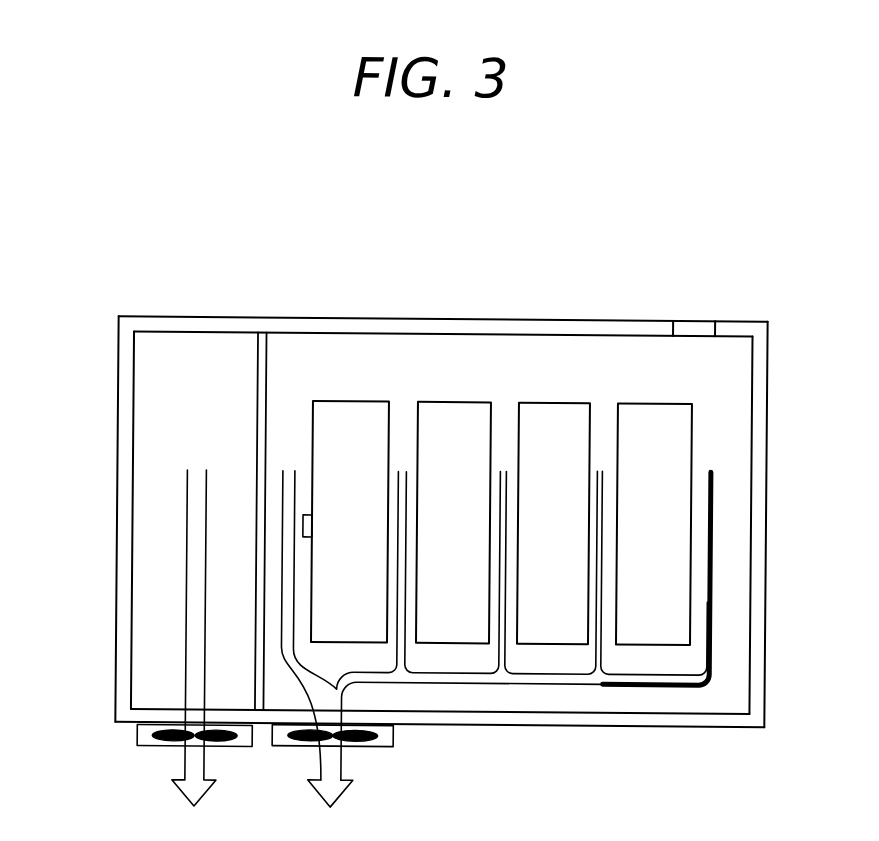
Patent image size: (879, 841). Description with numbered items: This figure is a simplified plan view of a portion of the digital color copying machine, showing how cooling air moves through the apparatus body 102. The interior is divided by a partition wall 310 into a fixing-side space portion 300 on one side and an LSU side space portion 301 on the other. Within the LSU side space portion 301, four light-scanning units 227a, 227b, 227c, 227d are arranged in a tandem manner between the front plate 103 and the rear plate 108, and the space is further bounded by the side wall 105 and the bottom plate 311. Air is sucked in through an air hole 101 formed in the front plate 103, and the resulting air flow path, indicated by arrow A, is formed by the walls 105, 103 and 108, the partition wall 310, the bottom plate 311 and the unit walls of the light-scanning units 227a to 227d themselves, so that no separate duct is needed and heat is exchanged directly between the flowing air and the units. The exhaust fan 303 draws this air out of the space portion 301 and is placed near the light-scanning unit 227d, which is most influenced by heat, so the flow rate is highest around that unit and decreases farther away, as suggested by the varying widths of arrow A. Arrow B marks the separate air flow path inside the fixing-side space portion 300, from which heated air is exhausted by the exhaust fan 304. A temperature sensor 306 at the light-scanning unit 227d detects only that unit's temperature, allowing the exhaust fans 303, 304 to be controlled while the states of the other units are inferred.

The air hole 101 is at (686, 328).
The apparatus body 102 is at (126, 600).
The front plate 103 is at (402, 331).
The side wall 105 is at (758, 604).
The rear plate 108 is at (518, 719).
The light-scanning unit 227a is at (644, 426).
The light-scanning unit 227b is at (546, 421).
The light-scanning unit 227c is at (454, 423).
The light-scanning unit 227d is at (347, 419).
The fixing-side space portion 300 is at (207, 382).
The LSU side space portion 301 is at (331, 382).
The exhaust fan 303 is at (285, 739).
The exhaust fan 304 is at (147, 739).
The temperature sensor 306 is at (303, 523).
The partition wall 310 is at (264, 363).
The bottom plate 311 is at (726, 366).
The arrow A (air flow path) A is at (288, 656).
The arrow B (air flow path) B is at (196, 630).